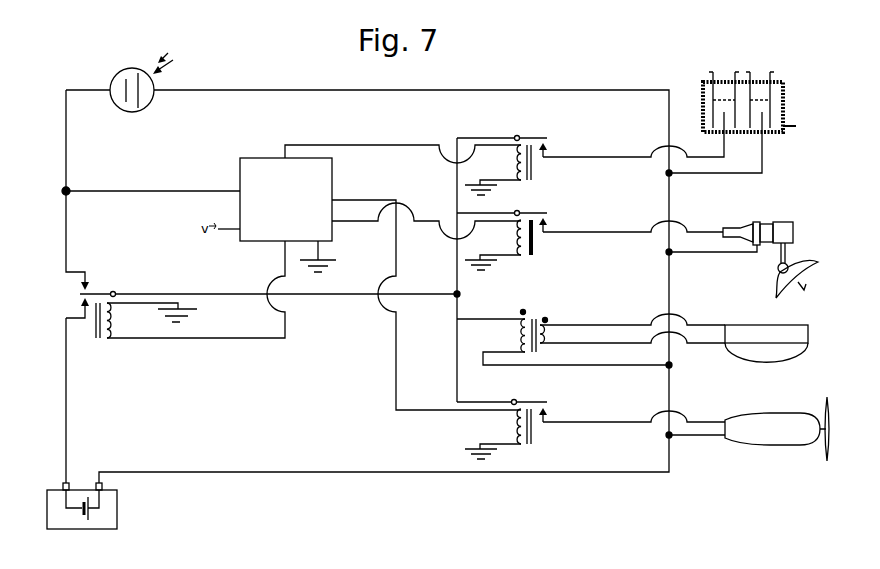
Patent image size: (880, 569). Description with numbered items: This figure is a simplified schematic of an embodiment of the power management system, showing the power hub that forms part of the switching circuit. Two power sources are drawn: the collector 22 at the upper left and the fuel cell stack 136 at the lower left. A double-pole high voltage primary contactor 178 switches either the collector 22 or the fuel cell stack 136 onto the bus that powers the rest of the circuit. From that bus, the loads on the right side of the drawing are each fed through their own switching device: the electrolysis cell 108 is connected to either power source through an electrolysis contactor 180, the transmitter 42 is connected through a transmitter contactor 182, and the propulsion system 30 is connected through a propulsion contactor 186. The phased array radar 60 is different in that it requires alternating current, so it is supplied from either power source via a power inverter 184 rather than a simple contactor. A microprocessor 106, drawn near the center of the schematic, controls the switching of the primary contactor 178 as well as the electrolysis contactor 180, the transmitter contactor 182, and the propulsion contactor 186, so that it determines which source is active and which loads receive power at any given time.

The collector 22 is at (132, 112).
The microprocessor 106 is at (266, 214).
The primary contactor 178 is at (130, 340).
The electrolysis contactor 180 is at (535, 137).
The transmitter contactor 182 is at (535, 212).
The power inverter 184 is at (510, 315).
The propulsion contactor 186 is at (533, 428).
The electrolysis cell 108 is at (703, 90).
The transmitter 42 is at (778, 257).
The phased array radar 60 is at (755, 352).
The propulsion system 30 is at (775, 440).
The fuel cell stack 136 is at (112, 507).